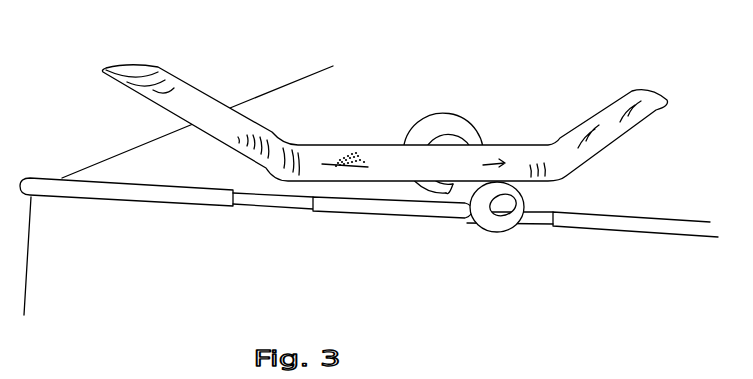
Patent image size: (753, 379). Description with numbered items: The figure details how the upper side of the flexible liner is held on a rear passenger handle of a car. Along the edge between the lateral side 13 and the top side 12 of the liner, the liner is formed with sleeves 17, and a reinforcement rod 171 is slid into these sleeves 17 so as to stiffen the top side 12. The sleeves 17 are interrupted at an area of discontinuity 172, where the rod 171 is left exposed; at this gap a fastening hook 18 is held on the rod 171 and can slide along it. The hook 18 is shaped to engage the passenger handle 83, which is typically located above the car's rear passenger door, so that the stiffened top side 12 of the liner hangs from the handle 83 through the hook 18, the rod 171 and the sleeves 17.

The top side 12 is at (325, 107).
The lateral side 13 is at (128, 272).
The sleeve 17 is at (210, 207).
The fastening hook 18 is at (463, 135).
The passenger handle 83 is at (363, 153).
The reinforcement rod 171 is at (296, 211).
The area of discontinuity 172 is at (538, 228).